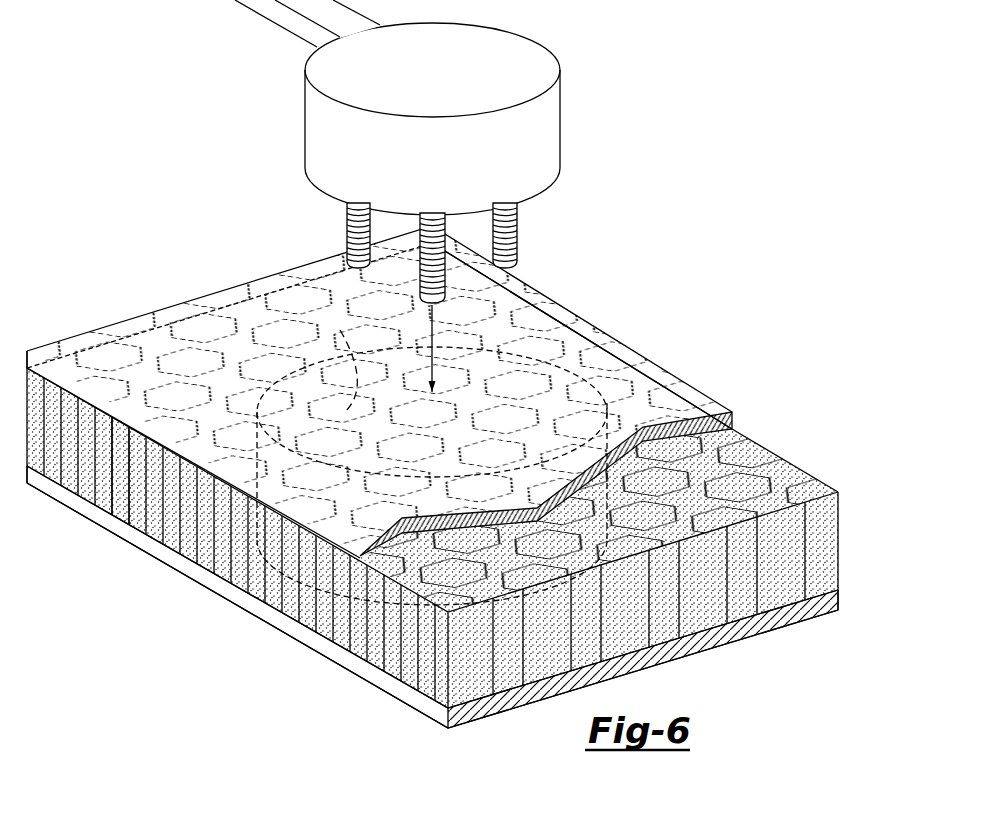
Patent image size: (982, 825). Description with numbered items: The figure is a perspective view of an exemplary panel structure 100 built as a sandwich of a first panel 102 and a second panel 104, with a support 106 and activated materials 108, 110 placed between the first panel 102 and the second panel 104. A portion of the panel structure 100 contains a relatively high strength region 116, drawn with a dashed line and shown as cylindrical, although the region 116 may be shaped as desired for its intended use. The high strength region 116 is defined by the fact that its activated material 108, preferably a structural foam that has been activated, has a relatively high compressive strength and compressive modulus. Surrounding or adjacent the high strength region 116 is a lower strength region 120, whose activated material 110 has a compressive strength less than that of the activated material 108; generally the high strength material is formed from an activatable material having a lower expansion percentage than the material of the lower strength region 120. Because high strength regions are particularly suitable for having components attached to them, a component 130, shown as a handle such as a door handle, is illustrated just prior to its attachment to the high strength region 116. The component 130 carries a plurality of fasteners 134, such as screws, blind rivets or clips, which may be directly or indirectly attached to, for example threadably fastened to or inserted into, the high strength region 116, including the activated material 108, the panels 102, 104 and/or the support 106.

The panel structure 100 is at (153, 260).
The first panel 102 is at (650, 361).
The second panel 104 is at (277, 630).
The support 106 is at (228, 552).
The activated material 108 is at (428, 313).
The activated material 110 is at (123, 490).
The high strength region 116 is at (508, 367).
The lower strength region 120 is at (172, 333).
The component 130 is at (597, 90).
The fasteners 134 is at (347, 225).